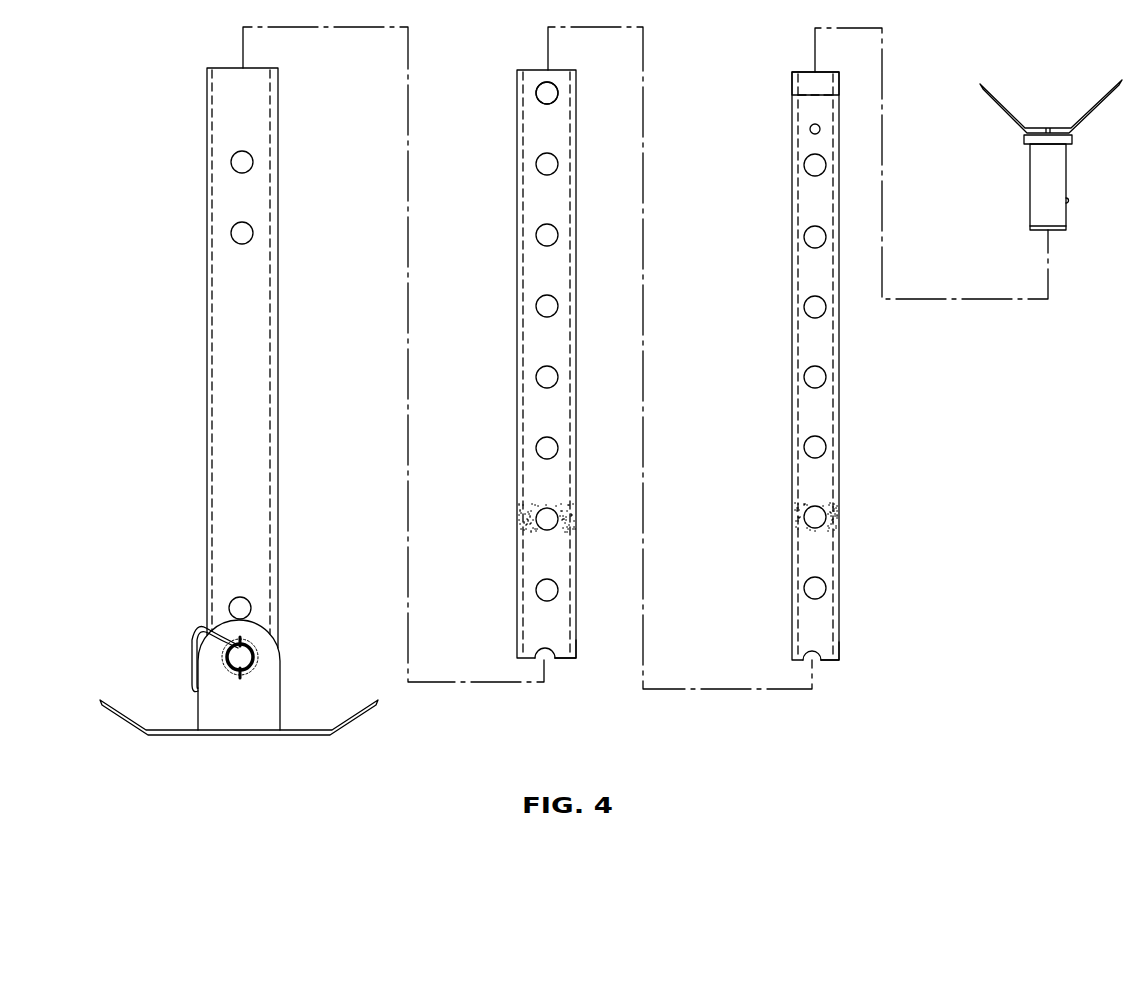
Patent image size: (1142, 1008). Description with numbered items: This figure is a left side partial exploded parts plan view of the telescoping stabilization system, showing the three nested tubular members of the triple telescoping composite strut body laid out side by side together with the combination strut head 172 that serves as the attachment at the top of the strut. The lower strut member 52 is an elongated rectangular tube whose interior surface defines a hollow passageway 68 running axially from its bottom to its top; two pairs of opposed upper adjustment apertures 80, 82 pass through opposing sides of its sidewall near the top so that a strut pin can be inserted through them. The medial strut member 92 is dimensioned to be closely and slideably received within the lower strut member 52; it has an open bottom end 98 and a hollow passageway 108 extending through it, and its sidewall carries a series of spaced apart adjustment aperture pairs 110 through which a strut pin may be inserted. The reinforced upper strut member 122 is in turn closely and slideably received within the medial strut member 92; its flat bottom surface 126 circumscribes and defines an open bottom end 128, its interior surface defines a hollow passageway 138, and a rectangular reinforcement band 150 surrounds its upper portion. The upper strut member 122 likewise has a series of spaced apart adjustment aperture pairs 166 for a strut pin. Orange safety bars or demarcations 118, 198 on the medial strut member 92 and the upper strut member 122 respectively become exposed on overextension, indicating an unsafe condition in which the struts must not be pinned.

The lower strut member 52 is at (197, 326).
The hollow passageway 68 is at (210, 422).
The upper adjustment aperture 80 is at (234, 228).
The upper adjustment aperture 82 is at (235, 154).
The medial strut member 92 is at (499, 258).
The open bottom end 98 is at (552, 674).
The hollow passageway 108 is at (558, 661).
The adjustment aperture pairs 110 is at (538, 86).
The safety bar 118 is at (528, 514).
The upper strut member 122 is at (774, 277).
The bottom surface 126 is at (833, 662).
The open bottom end 128 is at (822, 672).
The hollow passageway 138 is at (836, 562).
The reinforcement band 150 is at (806, 78).
The adjustment aperture pairs 166 is at (806, 160).
The safety bar 198 is at (797, 514).
The combination strut head 172 is at (1004, 64).